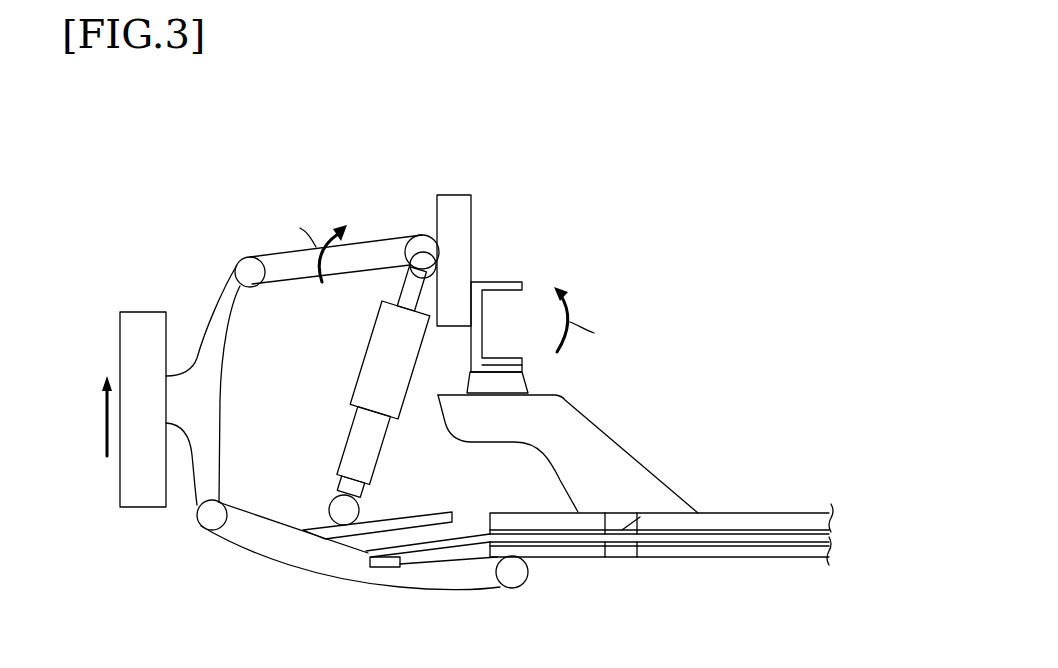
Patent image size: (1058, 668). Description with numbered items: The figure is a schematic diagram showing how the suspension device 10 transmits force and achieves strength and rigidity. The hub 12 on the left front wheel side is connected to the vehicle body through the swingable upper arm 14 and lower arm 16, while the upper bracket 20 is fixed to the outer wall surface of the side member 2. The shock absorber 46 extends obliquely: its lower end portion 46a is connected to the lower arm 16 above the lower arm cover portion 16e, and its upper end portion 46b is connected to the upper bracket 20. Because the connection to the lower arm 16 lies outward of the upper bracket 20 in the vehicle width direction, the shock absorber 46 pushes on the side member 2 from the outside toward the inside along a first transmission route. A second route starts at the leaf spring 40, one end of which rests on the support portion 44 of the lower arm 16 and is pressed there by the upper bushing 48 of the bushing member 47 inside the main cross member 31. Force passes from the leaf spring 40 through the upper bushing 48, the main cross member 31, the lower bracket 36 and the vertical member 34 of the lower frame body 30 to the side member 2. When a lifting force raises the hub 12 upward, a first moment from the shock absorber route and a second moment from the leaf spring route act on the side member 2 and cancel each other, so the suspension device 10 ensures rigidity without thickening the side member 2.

The suspension device 10 is at (467, 111).
The hub 12 is at (135, 301).
The upper arm 14 is at (365, 229).
The lower arm 16 is at (292, 574).
The lower arm cover portion 16e is at (407, 517).
The side member 2 is at (503, 282).
The upper bracket 20 is at (473, 210).
The lower frame body 30 is at (720, 425).
The main cross member 31 is at (784, 510).
The vertical member 34 is at (530, 382).
The lower bracket 36 is at (590, 410).
The leaf spring 40 is at (757, 539).
The support portion 44 is at (369, 570).
The shock absorber 46 is at (344, 360).
The lower end portion 46a is at (340, 508).
The upper end portion 46b is at (412, 268).
The bushing member 47 is at (625, 566).
The upper bushing 48 is at (642, 515).